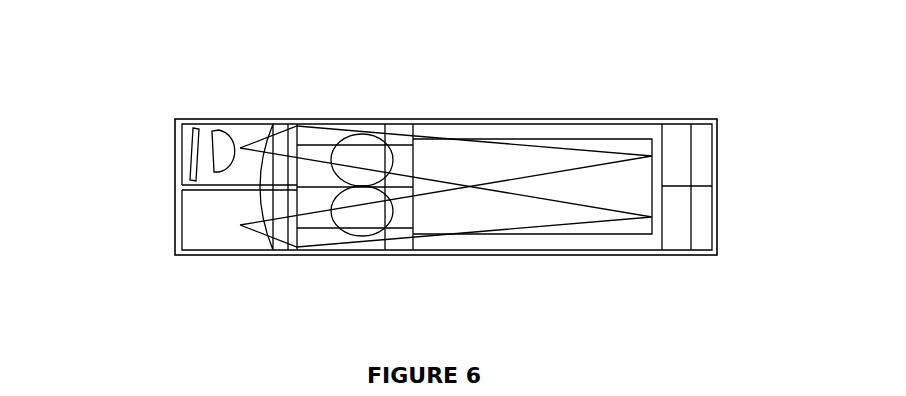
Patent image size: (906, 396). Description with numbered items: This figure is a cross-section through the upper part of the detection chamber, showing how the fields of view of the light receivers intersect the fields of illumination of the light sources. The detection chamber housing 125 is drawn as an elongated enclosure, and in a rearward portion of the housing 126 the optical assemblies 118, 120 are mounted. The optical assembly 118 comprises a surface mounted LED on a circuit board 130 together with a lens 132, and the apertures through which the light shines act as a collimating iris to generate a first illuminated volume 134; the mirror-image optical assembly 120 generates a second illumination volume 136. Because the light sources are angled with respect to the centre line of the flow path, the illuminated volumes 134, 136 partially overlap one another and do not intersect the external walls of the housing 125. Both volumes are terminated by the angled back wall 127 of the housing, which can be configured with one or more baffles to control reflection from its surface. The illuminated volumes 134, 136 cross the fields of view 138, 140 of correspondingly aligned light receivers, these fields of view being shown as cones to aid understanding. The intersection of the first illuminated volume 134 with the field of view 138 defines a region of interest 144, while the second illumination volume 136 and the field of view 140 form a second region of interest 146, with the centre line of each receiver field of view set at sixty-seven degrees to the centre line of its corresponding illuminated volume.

The optical assembly 118 is at (175, 158).
The optical assembly 120 is at (175, 220).
The detection chamber housing 125 is at (440, 119).
The rearward portion of the housing 126 is at (258, 119).
The angled back wall 127 is at (652, 172).
The circuit board 130 is at (190, 127).
The lens 132 is at (221, 133).
The first illuminated volume 134 is at (505, 155).
The second illumination volume 136 is at (528, 217).
The field of view 138 is at (333, 135).
The field of view 140 is at (320, 233).
The region of interest 144 is at (360, 157).
The second region of interest 146 is at (373, 213).